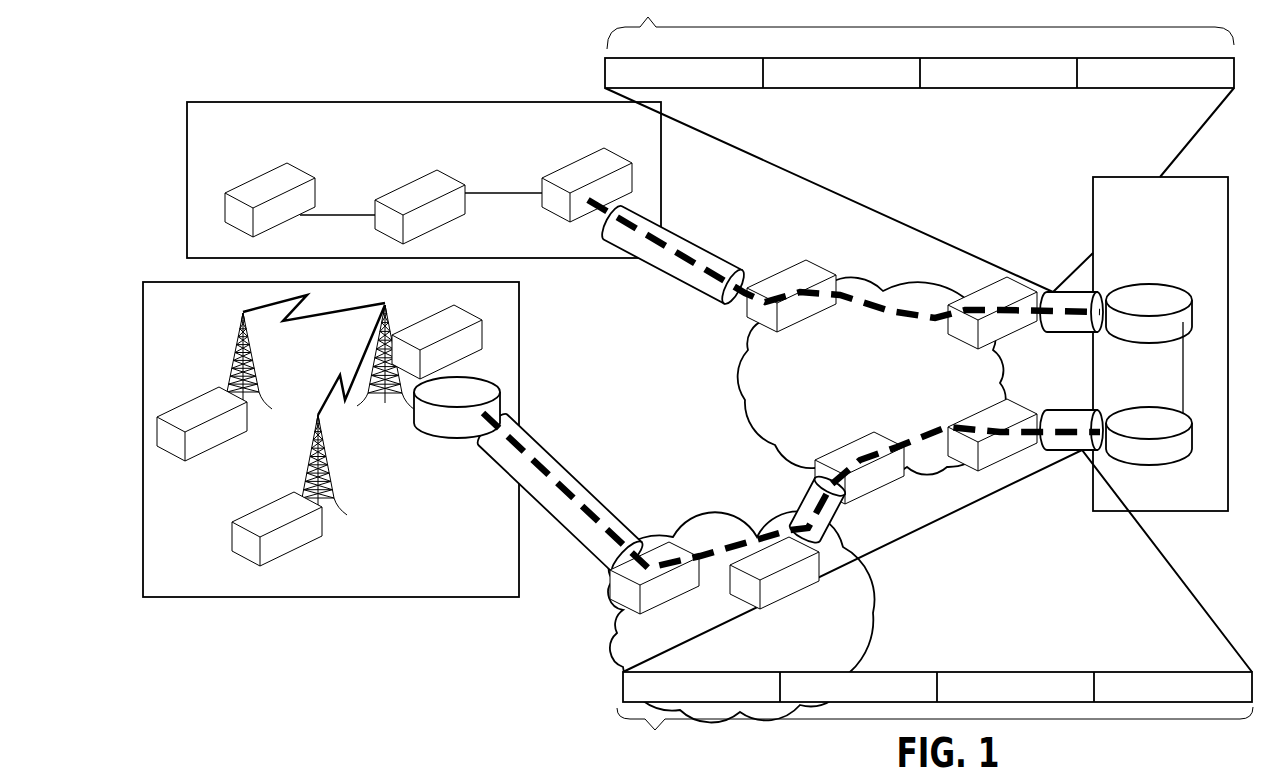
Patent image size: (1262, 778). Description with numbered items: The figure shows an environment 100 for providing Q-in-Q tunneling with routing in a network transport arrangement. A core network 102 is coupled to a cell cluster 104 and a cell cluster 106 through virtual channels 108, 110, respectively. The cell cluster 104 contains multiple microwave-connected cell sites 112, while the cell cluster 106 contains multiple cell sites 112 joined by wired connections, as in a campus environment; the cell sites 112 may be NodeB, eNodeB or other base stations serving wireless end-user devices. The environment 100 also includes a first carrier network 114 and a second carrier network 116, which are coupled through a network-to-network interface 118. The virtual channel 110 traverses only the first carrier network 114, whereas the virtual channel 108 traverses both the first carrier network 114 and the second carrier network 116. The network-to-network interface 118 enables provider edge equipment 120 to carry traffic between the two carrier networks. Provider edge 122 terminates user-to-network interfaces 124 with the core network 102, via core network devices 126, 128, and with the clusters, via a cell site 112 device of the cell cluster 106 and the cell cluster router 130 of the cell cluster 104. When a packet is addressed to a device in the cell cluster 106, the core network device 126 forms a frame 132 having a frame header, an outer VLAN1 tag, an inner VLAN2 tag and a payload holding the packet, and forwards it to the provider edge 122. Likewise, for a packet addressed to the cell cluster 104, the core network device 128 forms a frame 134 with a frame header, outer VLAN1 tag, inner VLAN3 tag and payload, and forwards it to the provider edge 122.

The environment 100 is at (150, 140).
The core network 102 is at (1183, 232).
The cell cluster 104 is at (290, 588).
The cell cluster 106 is at (493, 131).
The virtual channel 108 is at (850, 302).
The virtual channel 110 is at (930, 430).
The cell site 112 is at (333, 493).
The first carrier network 114 is at (788, 437).
The second carrier network 116 is at (824, 664).
The network-to-network interface 118 is at (800, 490).
The provider edge equipment 120 is at (872, 495).
The provider edge 122 is at (618, 592).
The user-to-network interface 124 is at (1080, 288).
The core network device 126 is at (1143, 327).
The core network device 128 is at (1153, 443).
The cell cluster router 130 is at (475, 393).
The frame 132 is at (646, 16).
The frame 134 is at (650, 731).